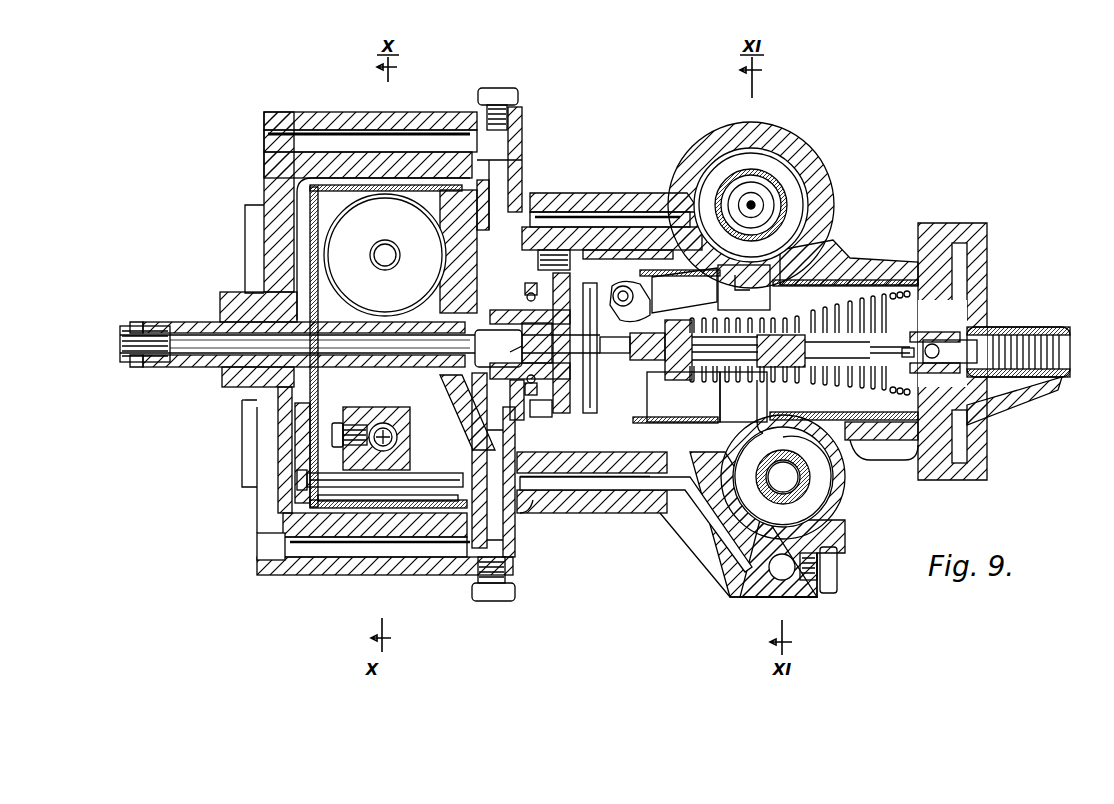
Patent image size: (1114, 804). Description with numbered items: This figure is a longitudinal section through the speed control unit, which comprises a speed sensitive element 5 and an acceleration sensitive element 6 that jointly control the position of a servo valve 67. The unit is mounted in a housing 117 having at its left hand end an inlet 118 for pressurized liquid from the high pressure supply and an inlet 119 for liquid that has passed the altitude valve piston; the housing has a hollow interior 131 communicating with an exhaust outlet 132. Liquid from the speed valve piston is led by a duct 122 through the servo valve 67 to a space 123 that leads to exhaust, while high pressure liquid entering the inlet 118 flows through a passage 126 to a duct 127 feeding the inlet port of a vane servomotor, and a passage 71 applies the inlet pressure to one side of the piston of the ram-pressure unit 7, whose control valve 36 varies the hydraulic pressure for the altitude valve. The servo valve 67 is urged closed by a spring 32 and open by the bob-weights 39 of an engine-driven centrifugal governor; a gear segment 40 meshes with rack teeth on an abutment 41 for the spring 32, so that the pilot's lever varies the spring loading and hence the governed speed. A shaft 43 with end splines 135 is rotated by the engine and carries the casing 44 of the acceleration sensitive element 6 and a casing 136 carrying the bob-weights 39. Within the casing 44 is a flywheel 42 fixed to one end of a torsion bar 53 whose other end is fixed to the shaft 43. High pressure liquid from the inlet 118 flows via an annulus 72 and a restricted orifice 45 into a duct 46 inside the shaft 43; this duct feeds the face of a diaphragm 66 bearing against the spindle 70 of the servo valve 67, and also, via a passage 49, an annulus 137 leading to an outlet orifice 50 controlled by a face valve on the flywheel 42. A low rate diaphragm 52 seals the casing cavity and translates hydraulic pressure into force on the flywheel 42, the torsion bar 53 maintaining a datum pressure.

The speed sensitive element 5 is at (863, 263).
The acceleration sensitive element 6 is at (427, 106).
The unit 7 is at (765, 190).
The spring 32 is at (840, 318).
The control valve 36 is at (762, 224).
The bob-weights 39 is at (664, 301).
The gear segment 40 is at (784, 418).
The abutment 41 is at (826, 420).
The flywheel 42 is at (320, 470).
The shaft 43 is at (196, 368).
The casing 44 is at (300, 195).
The restricted orifice 45 is at (498, 348).
The duct 46 is at (507, 358).
The passage 49 is at (442, 418).
The outlet orifice 50 is at (386, 424).
The diaphragm 52 is at (378, 233).
The torsion bar 53 is at (218, 343).
The diaphragm 66 is at (598, 384).
The servo valve 67 is at (903, 380).
The spindle 70 is at (760, 372).
The passage 71 is at (690, 235).
The annulus 72 is at (524, 418).
The housing 117 is at (338, 578).
The inlet 118 is at (258, 552).
The inlet 119 is at (266, 150).
The duct 122 is at (962, 440).
The space 123 is at (962, 268).
The passage 126 is at (610, 493).
The duct 127 is at (779, 576).
The hollow interior 131 is at (731, 406).
The exhaust outlet 132 is at (250, 218).
The splines 135 is at (168, 322).
The casing 136 is at (657, 424).
The annulus 137 is at (372, 428).